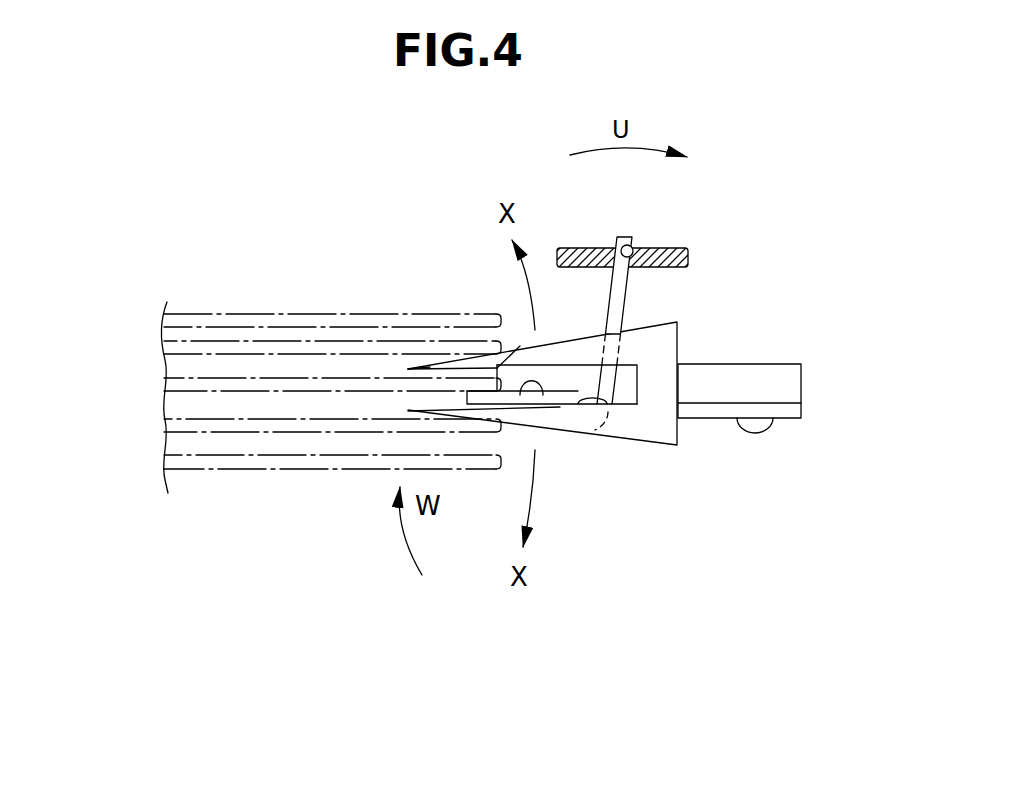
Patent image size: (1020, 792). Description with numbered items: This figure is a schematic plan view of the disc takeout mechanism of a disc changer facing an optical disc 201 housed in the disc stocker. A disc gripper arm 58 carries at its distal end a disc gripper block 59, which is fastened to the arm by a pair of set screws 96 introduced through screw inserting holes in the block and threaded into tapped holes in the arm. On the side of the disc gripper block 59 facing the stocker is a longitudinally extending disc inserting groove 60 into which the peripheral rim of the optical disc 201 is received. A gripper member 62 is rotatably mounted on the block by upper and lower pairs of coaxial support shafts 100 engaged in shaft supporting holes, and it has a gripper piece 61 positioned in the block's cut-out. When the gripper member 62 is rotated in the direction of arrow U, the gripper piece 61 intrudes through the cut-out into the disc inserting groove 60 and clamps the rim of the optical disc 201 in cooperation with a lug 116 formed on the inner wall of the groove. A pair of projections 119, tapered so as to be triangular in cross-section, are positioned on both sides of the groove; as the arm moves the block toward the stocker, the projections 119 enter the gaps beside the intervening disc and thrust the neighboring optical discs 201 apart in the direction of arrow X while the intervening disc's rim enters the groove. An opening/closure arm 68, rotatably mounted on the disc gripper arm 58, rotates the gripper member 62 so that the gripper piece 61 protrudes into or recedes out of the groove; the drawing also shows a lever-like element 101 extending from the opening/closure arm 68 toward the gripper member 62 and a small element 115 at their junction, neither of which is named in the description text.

The optical disc 201 is at (197, 323).
The lug 116 is at (475, 373).
The projections 119 is at (520, 345).
The disc inserting groove 60 is at (571, 369).
The gripper piece 61 is at (543, 393).
The gripper member 62 is at (607, 392).
The disc gripper block 59 is at (664, 436).
The disc gripper arm 58 is at (757, 379).
The set screws 96 is at (767, 423).
The support shafts 100 is at (553, 412).
The lever 101 is at (628, 237).
The pivot ring 115 is at (633, 249).
The opening/closure arm 68 is at (690, 255).